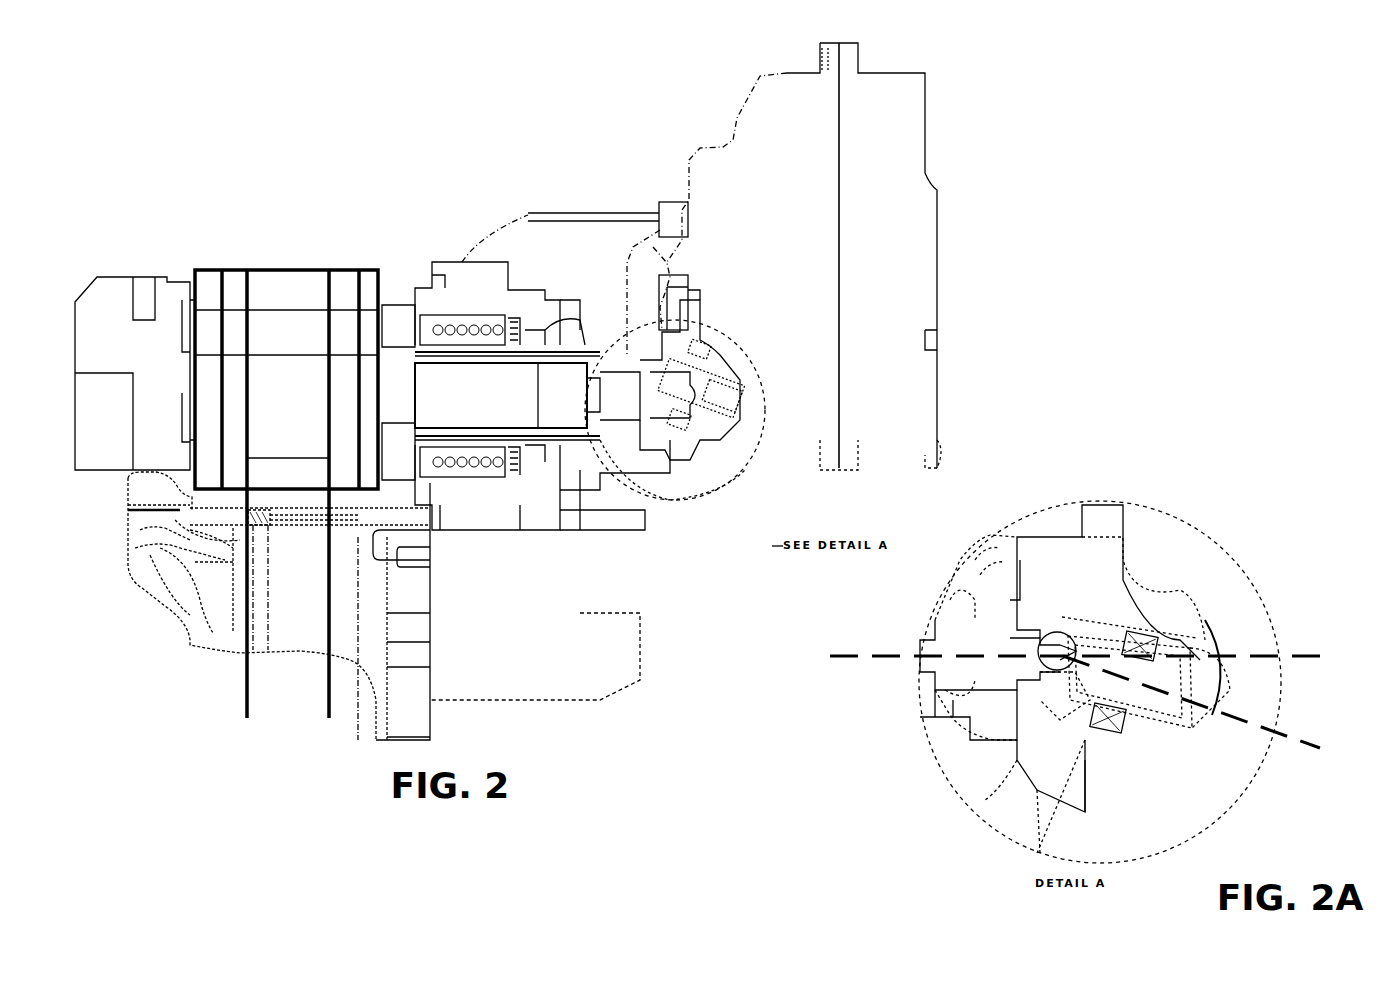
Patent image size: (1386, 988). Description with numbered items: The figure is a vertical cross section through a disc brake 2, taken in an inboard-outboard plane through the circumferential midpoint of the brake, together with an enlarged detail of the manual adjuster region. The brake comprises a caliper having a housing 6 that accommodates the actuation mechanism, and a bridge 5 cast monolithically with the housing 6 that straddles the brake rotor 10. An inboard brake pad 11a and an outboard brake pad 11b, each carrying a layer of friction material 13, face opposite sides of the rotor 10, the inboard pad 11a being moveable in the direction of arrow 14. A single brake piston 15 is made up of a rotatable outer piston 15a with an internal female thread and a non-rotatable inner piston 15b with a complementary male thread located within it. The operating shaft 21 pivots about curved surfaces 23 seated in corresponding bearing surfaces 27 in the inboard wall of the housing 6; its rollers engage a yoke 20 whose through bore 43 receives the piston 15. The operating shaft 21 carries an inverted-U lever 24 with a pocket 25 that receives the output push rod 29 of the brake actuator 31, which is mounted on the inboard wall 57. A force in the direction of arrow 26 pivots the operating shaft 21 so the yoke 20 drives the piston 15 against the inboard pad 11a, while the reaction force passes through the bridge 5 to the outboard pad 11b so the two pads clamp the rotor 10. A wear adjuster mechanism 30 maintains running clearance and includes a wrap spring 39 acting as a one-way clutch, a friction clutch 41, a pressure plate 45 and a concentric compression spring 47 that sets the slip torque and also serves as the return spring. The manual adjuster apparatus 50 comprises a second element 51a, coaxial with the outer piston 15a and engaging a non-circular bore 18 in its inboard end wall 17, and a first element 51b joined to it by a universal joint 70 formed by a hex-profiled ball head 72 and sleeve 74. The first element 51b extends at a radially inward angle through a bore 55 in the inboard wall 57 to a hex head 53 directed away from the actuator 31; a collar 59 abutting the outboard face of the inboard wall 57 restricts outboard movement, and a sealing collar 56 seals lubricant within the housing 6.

In FIG. 2, the disc brake 2 is at (495, 120).
In FIG. 2, the bridge 5 is at (90, 308).
In FIG. 2, the housing 6 is at (600, 497).
In FIG. 2A, the housing 6 is at (1010, 805).
In FIG. 2, the brake rotor 10 is at (294, 285).
In FIG. 2, the inboard brake pad 11a is at (350, 285).
In FIG. 2, the outboard brake pad 11b is at (233, 285).
In FIG. 2, the friction material 13 is at (316, 283).
In FIG. 2, the arrow 14 is at (312, 53).
In FIG. 2, the brake piston 15 is at (568, 446).
In FIG. 2, the outer piston 15a is at (438, 432).
In FIG. 2, the inner piston 15b is at (506, 396).
In FIG. 2A, the inboard end wall 17 is at (985, 608).
In FIG. 2A, the bore 18 is at (985, 690).
In FIG. 2, the yoke 20 is at (555, 335).
In FIG. 2, the operating shaft 21 is at (640, 252).
In FIG. 2, the curved surfaces 23 is at (625, 458).
In FIG. 2A, the curved surfaces 23 is at (1047, 740).
In FIG. 2, the lever 24 is at (660, 230).
In FIG. 2, the pocket 25 is at (678, 235).
In FIG. 2, the arrow 26 is at (704, 253).
In FIG. 2A, the bearing surfaces 27 is at (980, 790).
In FIG. 2, the output push rod 29 is at (690, 240).
In FIG. 2, the wear adjuster mechanism 30 is at (488, 500).
In FIG. 2, the brake actuator 31 is at (900, 92).
In FIG. 2, the wrap spring 39 is at (488, 330).
In FIG. 2, the friction clutch 41 is at (504, 325).
In FIG. 2, the through bore 43 is at (572, 350).
In FIG. 2, the pressure plate 45 is at (510, 478).
In FIG. 2, the compression spring 47 is at (445, 480).
In FIG. 2, the manual adjuster apparatus 50 is at (736, 439).
In FIG. 2A, the manual adjuster apparatus 50 is at (1207, 724).
In FIG. 2A, the second element 51a is at (967, 637).
In FIG. 2A, the first element 51b is at (1165, 680).
In FIG. 2A, the hex head 53 is at (1280, 658).
In FIG. 2A, the bore 55 is at (1143, 642).
In FIG. 2A, the sealing collar 56 is at (1166, 650).
In FIG. 2, the inboard wall 57 is at (659, 352).
In FIG. 2A, the inboard wall 57 is at (1042, 563).
In FIG. 2A, the collar 59 is at (1072, 633).
In FIG. 2A, the universal joint 70 is at (1060, 634).
In FIG. 2A, the ball head 72 is at (1043, 667).
In FIG. 2A, the sleeve 74 is at (1077, 673).